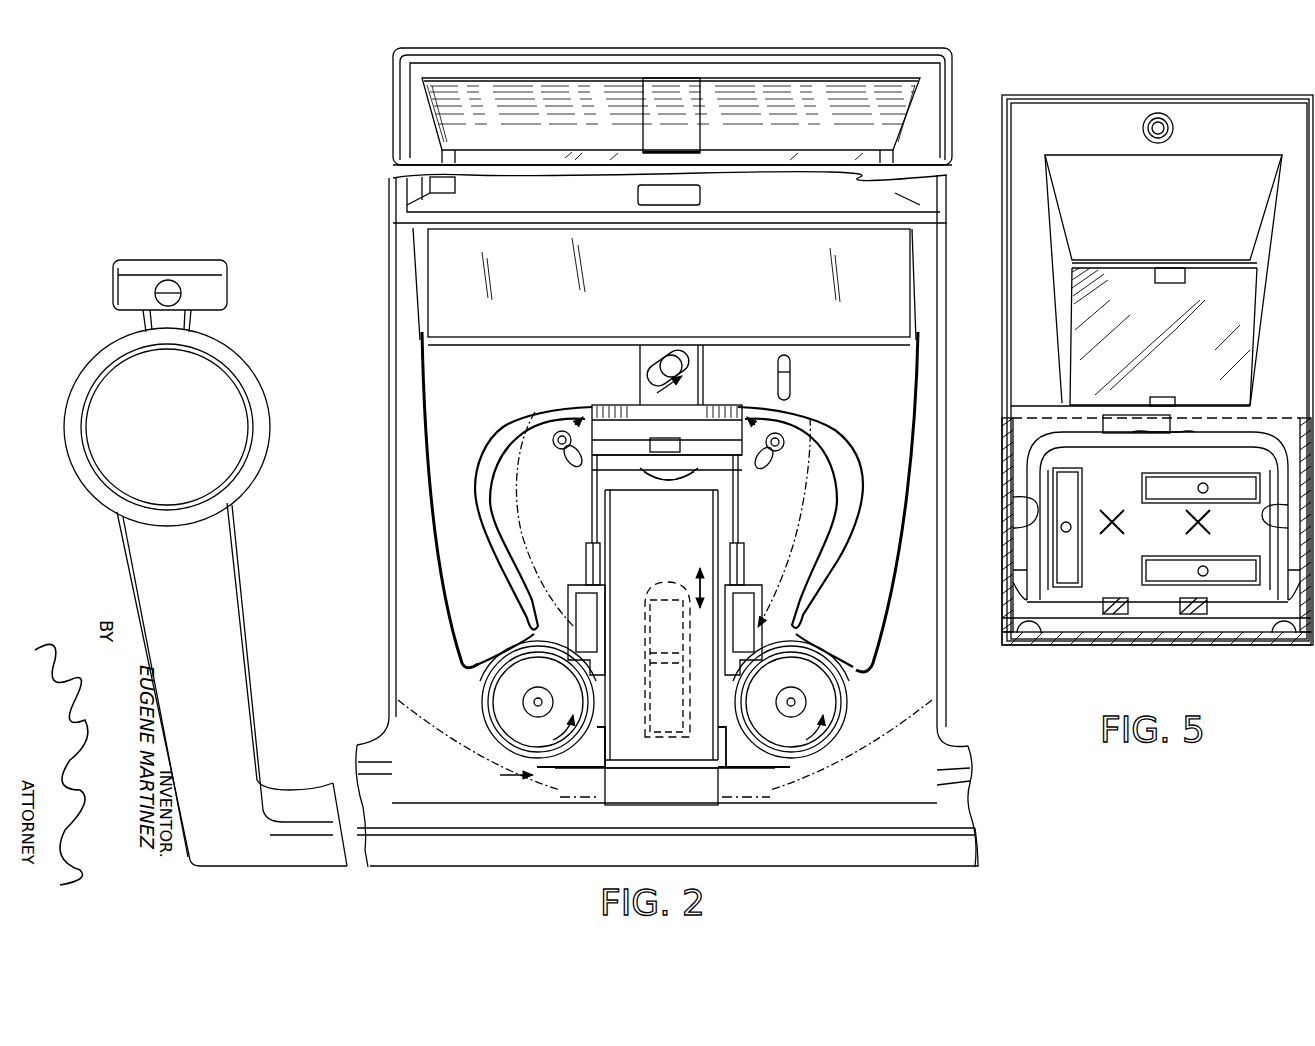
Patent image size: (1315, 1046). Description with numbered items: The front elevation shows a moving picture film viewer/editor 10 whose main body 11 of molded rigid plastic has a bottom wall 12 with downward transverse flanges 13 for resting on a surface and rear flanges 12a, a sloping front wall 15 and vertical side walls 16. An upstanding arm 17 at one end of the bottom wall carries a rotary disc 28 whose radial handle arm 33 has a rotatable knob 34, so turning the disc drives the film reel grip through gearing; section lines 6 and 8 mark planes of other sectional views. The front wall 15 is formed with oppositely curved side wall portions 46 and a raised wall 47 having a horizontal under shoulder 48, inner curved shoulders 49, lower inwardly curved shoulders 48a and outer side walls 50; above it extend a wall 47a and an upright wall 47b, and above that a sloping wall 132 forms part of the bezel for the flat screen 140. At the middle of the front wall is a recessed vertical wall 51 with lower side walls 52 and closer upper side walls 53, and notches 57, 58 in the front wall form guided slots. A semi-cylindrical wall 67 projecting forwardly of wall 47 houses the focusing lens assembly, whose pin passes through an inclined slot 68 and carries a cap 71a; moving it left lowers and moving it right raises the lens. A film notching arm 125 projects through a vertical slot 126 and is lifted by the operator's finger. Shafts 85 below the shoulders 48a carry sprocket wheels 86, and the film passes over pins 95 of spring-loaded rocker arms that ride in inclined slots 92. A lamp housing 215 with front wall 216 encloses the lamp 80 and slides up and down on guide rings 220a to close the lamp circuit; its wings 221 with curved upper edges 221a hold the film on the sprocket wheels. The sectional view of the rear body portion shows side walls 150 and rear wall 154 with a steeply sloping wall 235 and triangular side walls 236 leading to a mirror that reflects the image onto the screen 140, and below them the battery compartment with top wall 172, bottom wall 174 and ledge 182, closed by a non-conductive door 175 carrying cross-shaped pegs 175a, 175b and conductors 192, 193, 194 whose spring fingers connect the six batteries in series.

In FIG. 2, the moving picture film viewer/editor 10 is at (345, 148).
In FIG. 2, the section line 6 is at (173, 215).
In FIG. 2, the knob or handle 34 is at (212, 270).
In FIG. 2, the radial handle arm 33 is at (183, 323).
In FIG. 2, the rotary disc 28 is at (108, 383).
In FIG. 2, the upstanding arm or post 17 is at (225, 650).
In FIG. 2, the rear flanges 12a is at (313, 792).
In FIG. 2, the bottom wall 12 is at (670, 307).
In FIG. 2, the main body 11 is at (972, 823).
In FIG. 2, the transverse flanges 13 is at (587, 457).
In FIG. 2, the side walls 16 is at (447, 343).
In FIG. 2, the forwardly extending wall 47a is at (396, 383).
In FIG. 2, the raised wall portions 47 is at (470, 405).
In FIG. 2, the upwardly extending wall 47b is at (895, 296).
In FIG. 2, the screen 140 is at (850, 136).
In FIG. 5, the screen 140 is at (1240, 344).
In FIG. 2, the sloping wall 132 is at (778, 207).
In FIG. 2, the inclined slot 68 is at (676, 352).
In FIG. 2, the horizontal under shoulder 48 is at (553, 405).
In FIG. 2, the section line 8 is at (583, 403).
In FIG. 2, the cap 71a is at (660, 368).
In FIG. 2, the semi-cylindrical wall 67 is at (688, 386).
In FIG. 2, the vertical slot 126 is at (790, 362).
In FIG. 2, the crank arm 125 is at (790, 392).
In FIG. 2, the pins 95 is at (553, 433).
In FIG. 2, the inclined slots 92 is at (552, 455).
In FIG. 2, the recessed vertical wall 51 is at (746, 430).
In FIG. 2, the upper side walls 53 is at (723, 520).
In FIG. 2, the curved side wall portions 46 is at (493, 518).
In FIG. 2, the front wall 15 is at (805, 533).
In FIG. 2, the lamp housing 215 is at (590, 508).
In FIG. 2, the front wall of housing 216 is at (660, 566).
In FIG. 2, the lamp 80 is at (668, 585).
In FIG. 2, the notch 58 is at (572, 615).
In FIG. 2, the notch 57 is at (752, 610).
In FIG. 2, the inner side shoulders 49 is at (490, 540).
In FIG. 2, the outer side walls 50 is at (445, 567).
In FIG. 2, the guide rings 220a is at (572, 625).
In FIG. 2, the lower inwardly curved shoulders 48a is at (497, 657).
In FIG. 2, the shafts 85 is at (528, 703).
In FIG. 2, the sprocket wheels 86 is at (510, 727).
In FIG. 2, the curved upper edges 221a is at (520, 745).
In FIG. 2, the wings 221 is at (530, 786).
In FIG. 2, the lower side walls 52 is at (715, 780).
In FIG. 5, the side walls of rear body 150 is at (1004, 327).
In FIG. 5, the rear wall 154 is at (1290, 122).
In FIG. 5, the steeply sloping wall 235 is at (1232, 142).
In FIG. 5, the sloping side walls 236 is at (1062, 247).
In FIG. 5, the top wall of battery compartment 172 is at (1200, 430).
In FIG. 5, the horizontal conductor 193 is at (1232, 466).
In FIG. 5, the shelf or ledge 182 is at (1036, 510).
In FIG. 5, the rear cover or door 175 is at (1122, 494).
In FIG. 5, the cross-shaped peg 175b is at (1126, 523).
In FIG. 5, the cross-shaped peg 175a is at (1210, 528).
In FIG. 5, the vertical conductor 192 is at (1086, 571).
In FIG. 5, the bottom wall of battery compartment 174 is at (1124, 580).
In FIG. 5, the horizontal conductor 194 is at (1232, 596).